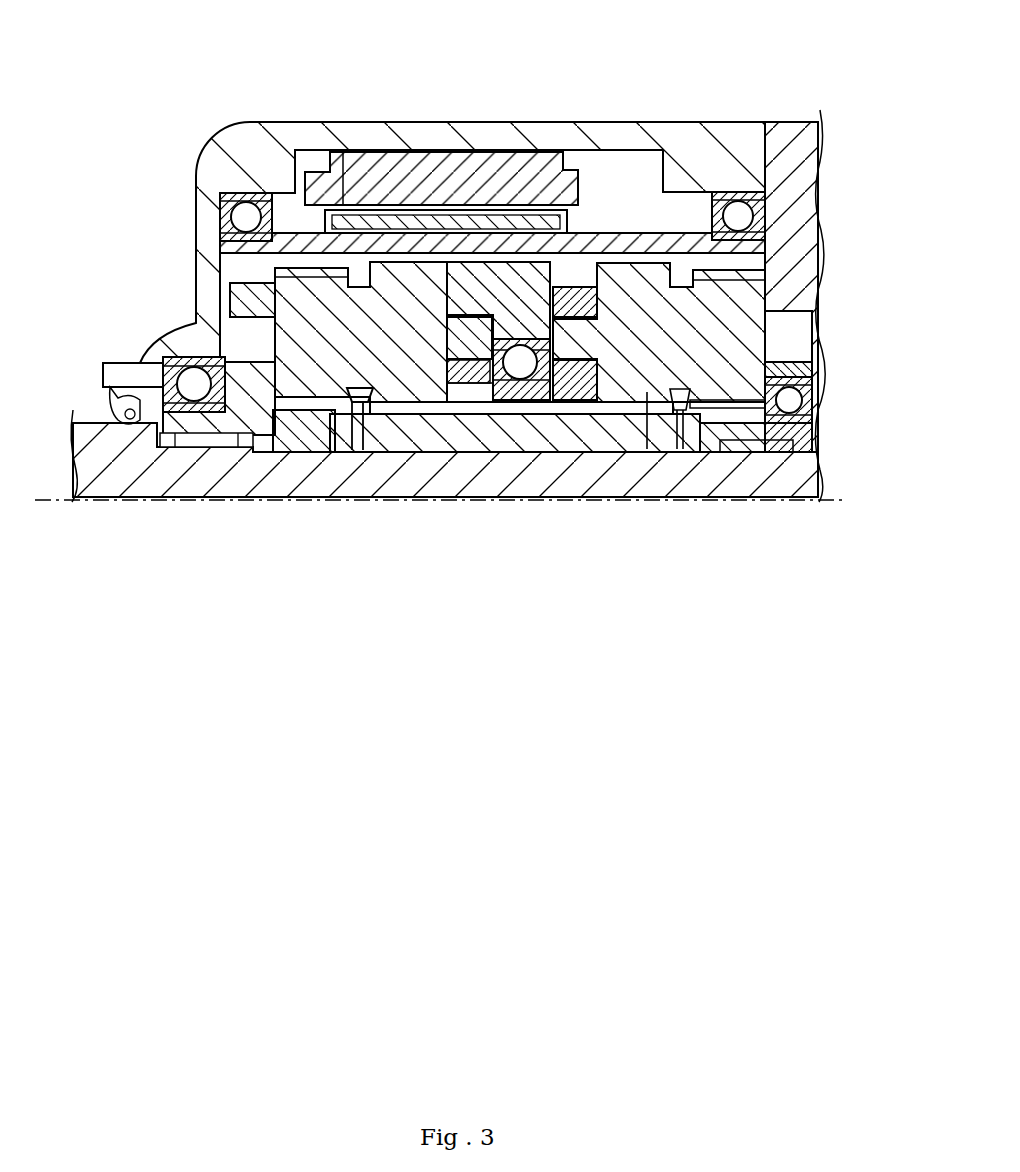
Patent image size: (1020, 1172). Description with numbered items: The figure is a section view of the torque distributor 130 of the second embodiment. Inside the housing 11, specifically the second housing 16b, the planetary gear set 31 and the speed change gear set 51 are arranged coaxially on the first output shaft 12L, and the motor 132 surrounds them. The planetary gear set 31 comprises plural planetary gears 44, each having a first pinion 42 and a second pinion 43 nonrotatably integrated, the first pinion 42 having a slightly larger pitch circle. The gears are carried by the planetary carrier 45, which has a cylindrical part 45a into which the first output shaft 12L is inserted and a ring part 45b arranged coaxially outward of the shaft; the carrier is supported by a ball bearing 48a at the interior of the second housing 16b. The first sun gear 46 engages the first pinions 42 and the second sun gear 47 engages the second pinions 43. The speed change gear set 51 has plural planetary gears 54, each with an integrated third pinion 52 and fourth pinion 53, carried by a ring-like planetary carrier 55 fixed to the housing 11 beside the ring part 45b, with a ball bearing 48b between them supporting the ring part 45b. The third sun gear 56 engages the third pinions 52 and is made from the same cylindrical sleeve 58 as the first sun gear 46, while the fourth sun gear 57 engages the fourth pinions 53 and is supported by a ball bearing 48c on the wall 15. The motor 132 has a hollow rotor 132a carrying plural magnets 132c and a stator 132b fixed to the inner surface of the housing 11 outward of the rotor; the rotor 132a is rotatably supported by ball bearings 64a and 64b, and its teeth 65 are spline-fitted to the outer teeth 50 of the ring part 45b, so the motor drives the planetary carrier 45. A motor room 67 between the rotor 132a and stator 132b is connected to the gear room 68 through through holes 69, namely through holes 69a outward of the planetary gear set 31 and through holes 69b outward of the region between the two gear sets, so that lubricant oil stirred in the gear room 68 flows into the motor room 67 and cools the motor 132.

The torque distributor 130 is at (124, 120).
The motor room 67 is at (290, 188).
The through holes 69 is at (486, 157).
The through holes 69a is at (328, 231).
The through holes 69b is at (592, 232).
The motor 132 is at (441, 137).
The rotor 132a is at (456, 228).
The stator 132b is at (408, 152).
The magnets 132c is at (523, 225).
The housing 11 is at (740, 239).
The second housing 16b is at (726, 135).
The wall 15 is at (791, 266).
The ball bearing 64a is at (197, 181).
The ball bearing 64b is at (822, 188).
The gear room 68 is at (245, 270).
The speed change gear set 51 is at (759, 257).
The planetary gear set 31 is at (228, 318).
The ball bearing 48a is at (166, 351).
The first output shaft 12L is at (74, 417).
The planetary carrier 45 is at (444, 403).
The cylindrical part 45a is at (197, 458).
The ring part 45b is at (305, 348).
The teeth 65 is at (441, 327).
The outer teeth 50 is at (507, 264).
The planetary carrier 55 is at (599, 305).
The ball bearing 48c is at (816, 390).
The ball bearing 48b is at (510, 385).
The second sun gear 47 is at (285, 440).
The second pinion 43 is at (332, 396).
The first pinion 42 is at (393, 396).
The planetary gears 44 is at (369, 488).
The first sun gear 46 is at (446, 449).
The third sun gear 56 is at (598, 492).
The cylindrical sleeve 58 is at (526, 514).
The third pinion 52 is at (648, 420).
The fourth pinion 53 is at (722, 446).
The planetary gears 54 is at (719, 505).
The fourth sun gear 57 is at (766, 442).